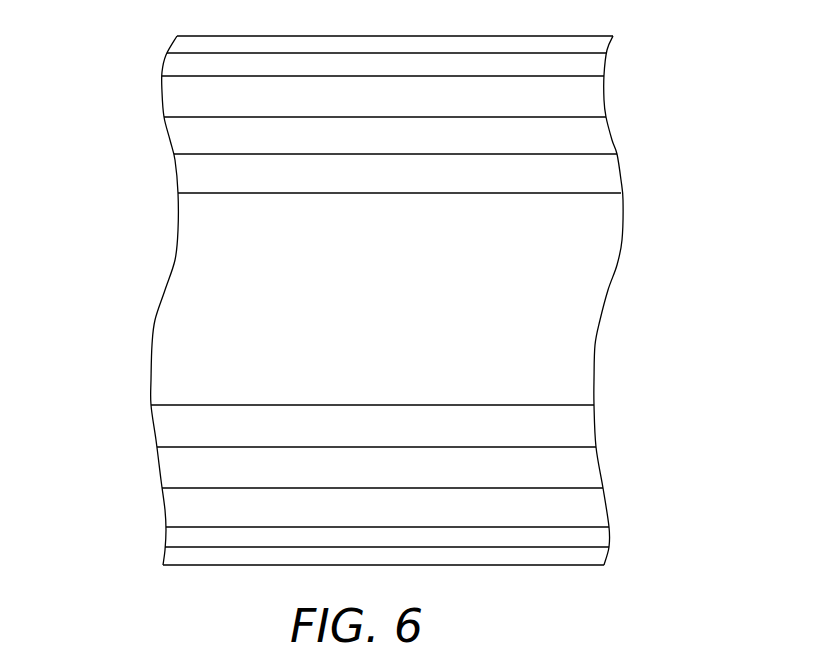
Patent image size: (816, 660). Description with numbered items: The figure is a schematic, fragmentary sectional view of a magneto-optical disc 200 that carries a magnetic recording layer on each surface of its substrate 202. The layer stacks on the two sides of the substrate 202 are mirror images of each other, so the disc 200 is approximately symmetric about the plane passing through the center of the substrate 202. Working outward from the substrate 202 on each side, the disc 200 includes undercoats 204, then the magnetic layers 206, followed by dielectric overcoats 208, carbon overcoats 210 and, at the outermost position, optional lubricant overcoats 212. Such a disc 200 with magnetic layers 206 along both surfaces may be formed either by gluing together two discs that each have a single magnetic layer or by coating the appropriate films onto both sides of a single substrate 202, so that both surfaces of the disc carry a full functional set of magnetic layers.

The magneto-optical disc 200 is at (638, 299).
The substrate 202 is at (152, 347).
The undercoats 204 is at (175, 175).
The magnetic layers 206 is at (168, 140).
The dielectric overcoats 208 is at (162, 92).
The carbon overcoats 210 is at (162, 63).
The lubricant overcoats 212 is at (176, 36).